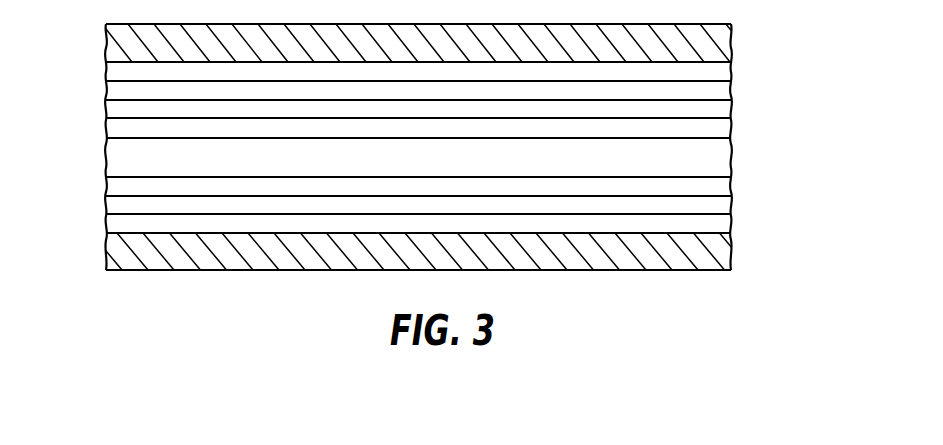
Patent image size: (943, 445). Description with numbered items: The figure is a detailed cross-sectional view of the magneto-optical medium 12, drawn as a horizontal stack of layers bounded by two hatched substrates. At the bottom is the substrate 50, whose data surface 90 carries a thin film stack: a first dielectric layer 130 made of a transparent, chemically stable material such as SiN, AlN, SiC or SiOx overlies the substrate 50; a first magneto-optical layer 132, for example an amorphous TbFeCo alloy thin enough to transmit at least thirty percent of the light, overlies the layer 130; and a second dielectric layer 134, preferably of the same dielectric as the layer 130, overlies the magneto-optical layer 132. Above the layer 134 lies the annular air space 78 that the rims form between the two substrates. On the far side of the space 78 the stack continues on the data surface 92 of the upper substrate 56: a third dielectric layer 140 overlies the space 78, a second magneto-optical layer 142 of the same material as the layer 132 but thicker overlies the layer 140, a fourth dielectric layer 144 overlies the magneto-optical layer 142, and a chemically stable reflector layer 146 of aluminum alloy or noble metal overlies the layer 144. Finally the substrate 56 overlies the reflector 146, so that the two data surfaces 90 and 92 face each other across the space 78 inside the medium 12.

The medium 12 is at (442, 206).
The substrate 50 is at (103, 253).
The substrate 56 is at (103, 42).
The annular space 78 is at (110, 158).
The data surface 90 is at (442, 212).
The data surface 92 is at (442, 95).
The first dielectric layer 130 is at (723, 223).
The first magneto-optical layer 132 is at (723, 207).
The second dielectric layer 134 is at (723, 188).
The third dielectric layer 140 is at (723, 128).
The second magneto-optical layer 142 is at (723, 113).
The fourth dielectric layer 144 is at (723, 92).
The reflector layer 146 is at (723, 73).